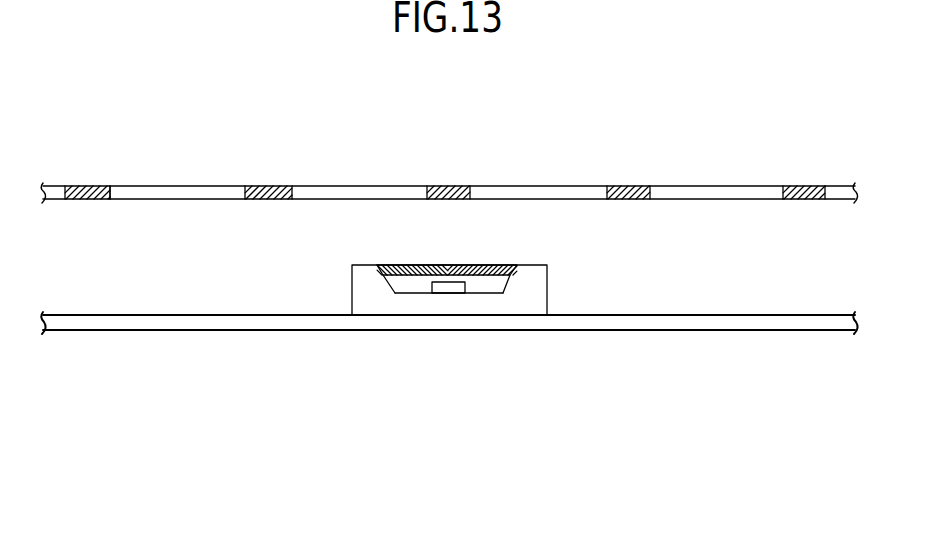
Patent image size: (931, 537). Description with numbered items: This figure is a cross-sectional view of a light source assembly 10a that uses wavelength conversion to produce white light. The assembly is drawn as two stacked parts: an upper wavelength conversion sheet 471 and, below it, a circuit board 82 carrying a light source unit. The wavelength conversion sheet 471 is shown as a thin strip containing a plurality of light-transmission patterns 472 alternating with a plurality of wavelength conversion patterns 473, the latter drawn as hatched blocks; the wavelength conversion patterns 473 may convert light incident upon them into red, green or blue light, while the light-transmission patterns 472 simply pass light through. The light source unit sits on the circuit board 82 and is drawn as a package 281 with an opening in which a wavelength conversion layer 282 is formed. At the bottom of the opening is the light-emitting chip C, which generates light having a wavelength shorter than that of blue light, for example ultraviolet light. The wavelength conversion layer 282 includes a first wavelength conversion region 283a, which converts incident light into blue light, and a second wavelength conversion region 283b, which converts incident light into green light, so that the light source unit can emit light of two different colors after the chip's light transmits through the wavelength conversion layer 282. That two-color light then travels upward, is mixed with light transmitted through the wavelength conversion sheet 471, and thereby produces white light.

The light emitting device / backlight assembly 10a is at (208, 397).
The wavelength conversion sheet 471 is at (201, 140).
The light-transmission patterns 472 is at (222, 193).
The wavelength conversion patterns 473 is at (275, 188).
The package body 281 is at (340, 290).
The wavelength conversion layer 282 is at (449, 352).
The first wavelength conversion region 283a is at (380, 279).
The second wavelength conversion region 283b is at (492, 279).
The circuit board 82 is at (497, 400).
The light-emitting chip C is at (450, 289).